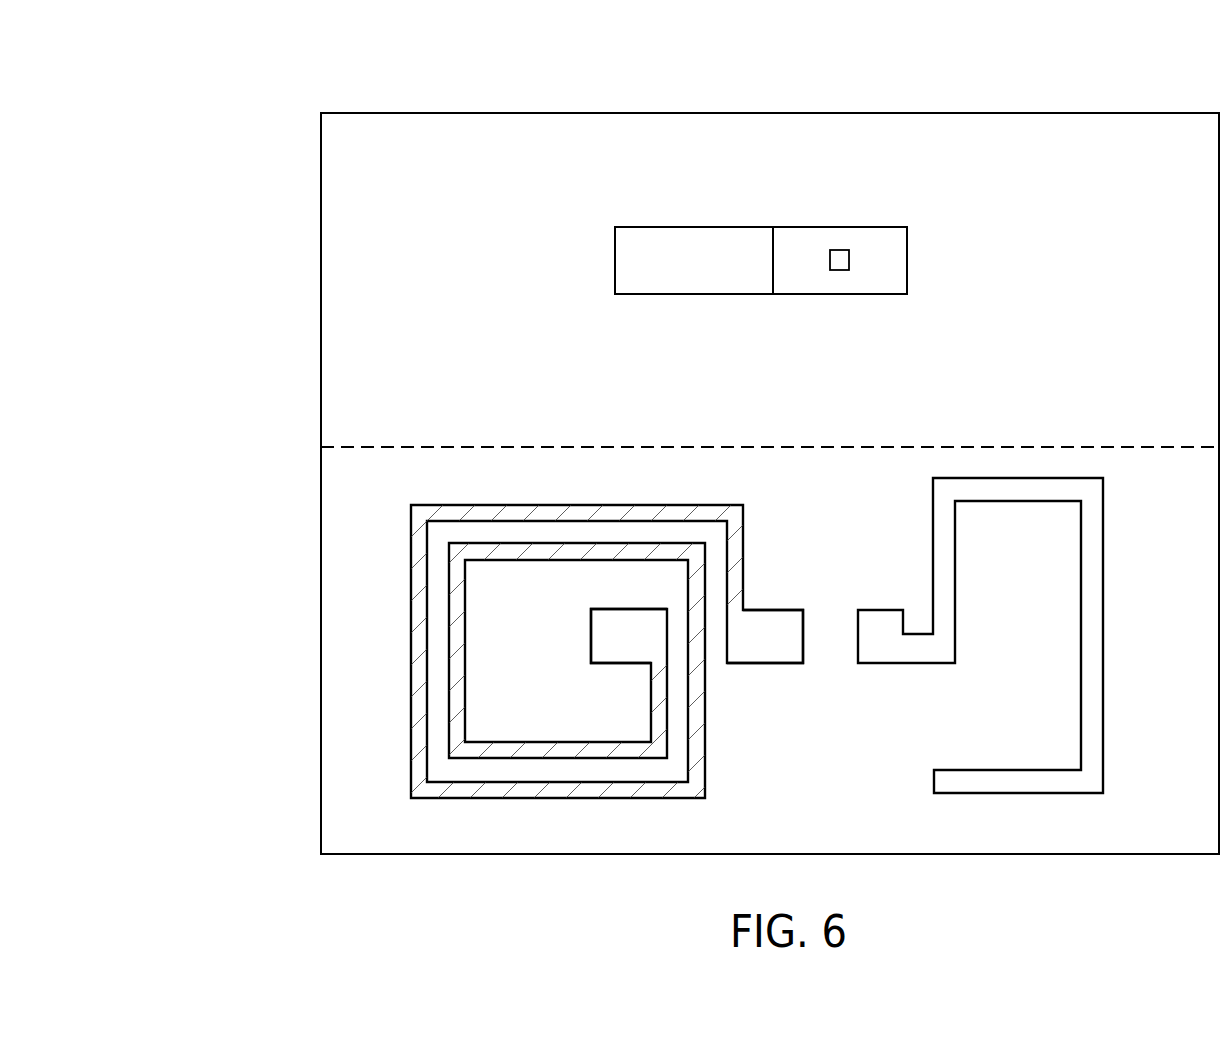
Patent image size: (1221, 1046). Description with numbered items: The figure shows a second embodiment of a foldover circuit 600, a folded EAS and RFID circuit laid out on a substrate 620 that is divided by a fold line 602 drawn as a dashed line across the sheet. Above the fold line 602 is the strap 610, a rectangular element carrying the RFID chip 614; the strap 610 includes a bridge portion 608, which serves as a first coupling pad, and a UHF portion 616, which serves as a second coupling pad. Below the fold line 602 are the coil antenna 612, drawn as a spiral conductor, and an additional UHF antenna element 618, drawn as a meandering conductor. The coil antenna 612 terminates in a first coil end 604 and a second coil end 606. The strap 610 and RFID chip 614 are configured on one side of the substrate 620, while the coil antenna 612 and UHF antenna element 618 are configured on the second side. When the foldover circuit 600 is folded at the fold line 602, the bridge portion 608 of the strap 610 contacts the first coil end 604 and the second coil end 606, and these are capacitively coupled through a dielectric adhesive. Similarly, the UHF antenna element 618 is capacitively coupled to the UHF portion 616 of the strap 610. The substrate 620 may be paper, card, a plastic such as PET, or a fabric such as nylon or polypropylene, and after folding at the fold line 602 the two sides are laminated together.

The foldover circuit 600 is at (668, 482).
The fold line 602 is at (703, 421).
The first coil end 604 is at (772, 622).
The second coil end 606 is at (610, 633).
The bridge portion 608 is at (842, 313).
The strap 610 is at (717, 259).
The coil antenna 612 is at (410, 658).
The RFID chip 614 is at (840, 248).
The UHF portion 616 is at (910, 208).
The UHF antenna element 618 is at (1103, 572).
The substrate 620 is at (1021, 855).